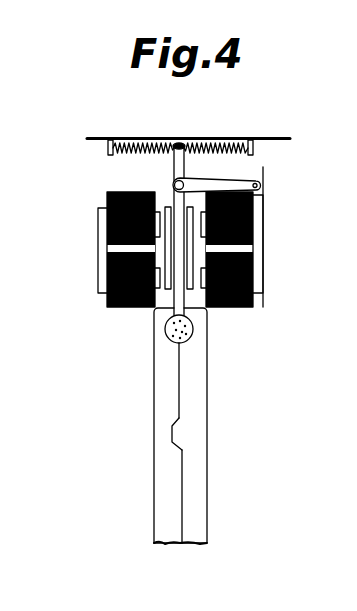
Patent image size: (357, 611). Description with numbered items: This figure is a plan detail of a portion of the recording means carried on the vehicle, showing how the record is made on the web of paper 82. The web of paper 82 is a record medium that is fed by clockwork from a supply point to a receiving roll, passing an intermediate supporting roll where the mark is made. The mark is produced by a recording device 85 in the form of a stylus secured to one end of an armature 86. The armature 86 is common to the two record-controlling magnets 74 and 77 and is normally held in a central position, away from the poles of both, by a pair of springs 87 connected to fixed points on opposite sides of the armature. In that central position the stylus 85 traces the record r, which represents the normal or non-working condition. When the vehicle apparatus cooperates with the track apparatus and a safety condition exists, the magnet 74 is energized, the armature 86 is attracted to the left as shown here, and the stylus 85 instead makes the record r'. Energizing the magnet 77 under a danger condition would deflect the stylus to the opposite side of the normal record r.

The springs 87 is at (200, 143).
The armature 86 is at (181, 200).
The magnet 74 is at (98, 210).
The magnet 77 is at (263, 210).
The recording device 85 is at (193, 329).
The web of paper 82 is at (198, 422).
The record r is at (210, 443).
The record r' is at (145, 435).